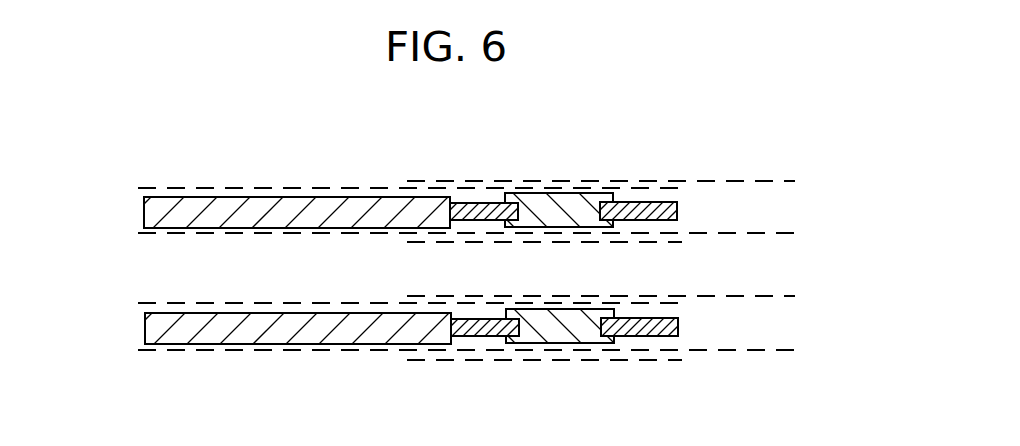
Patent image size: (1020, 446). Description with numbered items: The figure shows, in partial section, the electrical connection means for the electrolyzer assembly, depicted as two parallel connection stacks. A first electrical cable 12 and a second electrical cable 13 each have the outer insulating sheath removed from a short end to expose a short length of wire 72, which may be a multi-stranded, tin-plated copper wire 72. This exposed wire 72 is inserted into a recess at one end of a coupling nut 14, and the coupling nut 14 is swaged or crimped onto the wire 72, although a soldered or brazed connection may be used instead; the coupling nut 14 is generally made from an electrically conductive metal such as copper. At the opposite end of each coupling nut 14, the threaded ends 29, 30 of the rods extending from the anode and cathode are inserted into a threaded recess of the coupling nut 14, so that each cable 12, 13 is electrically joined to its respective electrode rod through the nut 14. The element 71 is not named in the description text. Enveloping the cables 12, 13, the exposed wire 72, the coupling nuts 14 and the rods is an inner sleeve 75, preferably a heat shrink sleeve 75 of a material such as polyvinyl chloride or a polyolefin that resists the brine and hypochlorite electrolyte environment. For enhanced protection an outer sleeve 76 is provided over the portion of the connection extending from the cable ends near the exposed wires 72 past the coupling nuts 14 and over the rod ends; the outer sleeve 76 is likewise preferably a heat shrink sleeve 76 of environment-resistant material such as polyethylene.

The first electrical cable 12 is at (144, 325).
The second electrical cable 13 is at (143, 213).
The coupling nut 14 is at (577, 202).
The threaded end of rod 29 is at (643, 336).
The threaded end of rod 30 is at (652, 203).
The connecting strip 71 is at (452, 195).
The exposed wire 72 is at (486, 206).
The inner sleeve 75 is at (266, 352).
The outer sleeve 76 is at (488, 361).